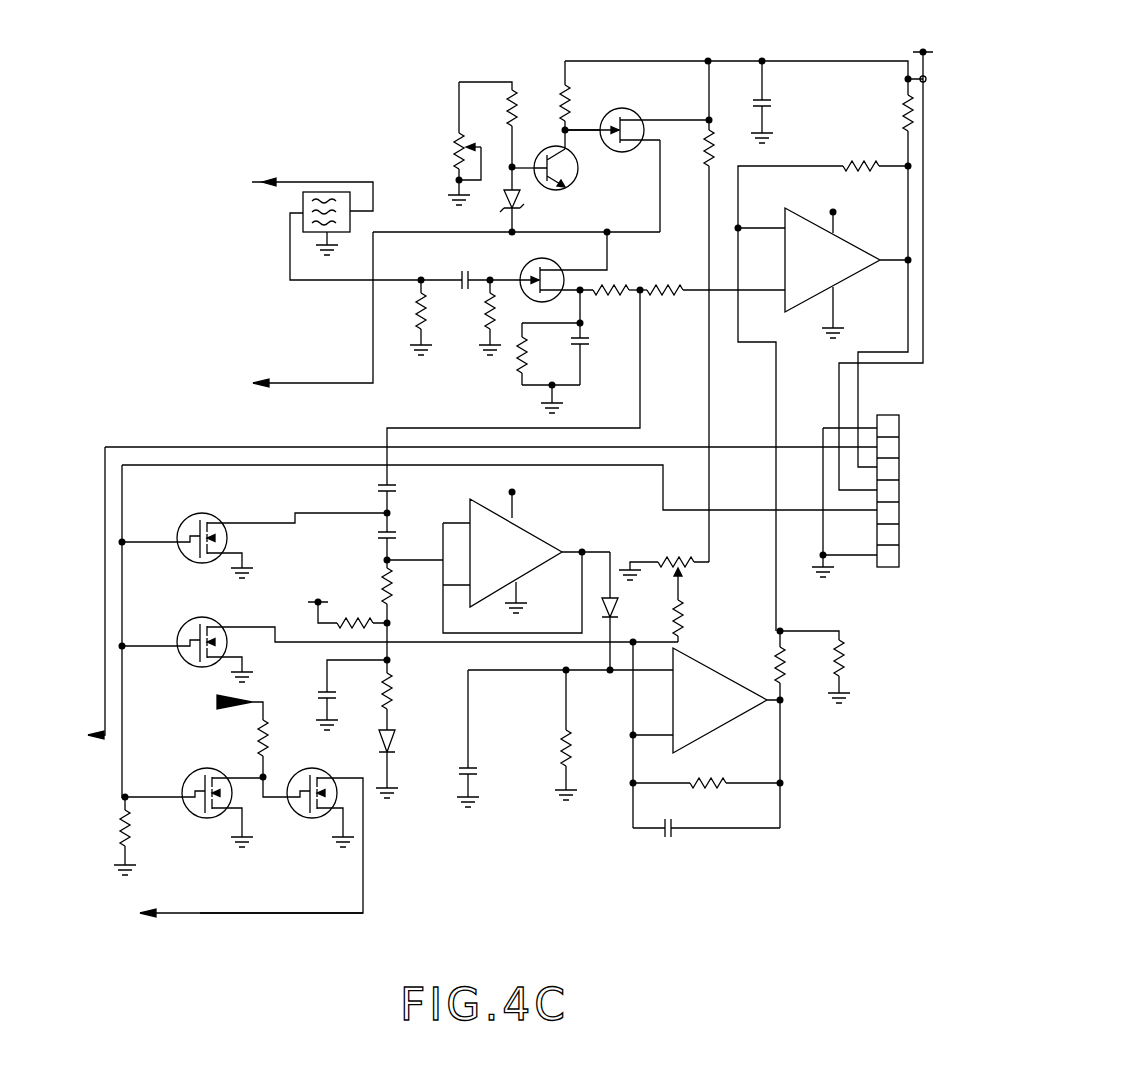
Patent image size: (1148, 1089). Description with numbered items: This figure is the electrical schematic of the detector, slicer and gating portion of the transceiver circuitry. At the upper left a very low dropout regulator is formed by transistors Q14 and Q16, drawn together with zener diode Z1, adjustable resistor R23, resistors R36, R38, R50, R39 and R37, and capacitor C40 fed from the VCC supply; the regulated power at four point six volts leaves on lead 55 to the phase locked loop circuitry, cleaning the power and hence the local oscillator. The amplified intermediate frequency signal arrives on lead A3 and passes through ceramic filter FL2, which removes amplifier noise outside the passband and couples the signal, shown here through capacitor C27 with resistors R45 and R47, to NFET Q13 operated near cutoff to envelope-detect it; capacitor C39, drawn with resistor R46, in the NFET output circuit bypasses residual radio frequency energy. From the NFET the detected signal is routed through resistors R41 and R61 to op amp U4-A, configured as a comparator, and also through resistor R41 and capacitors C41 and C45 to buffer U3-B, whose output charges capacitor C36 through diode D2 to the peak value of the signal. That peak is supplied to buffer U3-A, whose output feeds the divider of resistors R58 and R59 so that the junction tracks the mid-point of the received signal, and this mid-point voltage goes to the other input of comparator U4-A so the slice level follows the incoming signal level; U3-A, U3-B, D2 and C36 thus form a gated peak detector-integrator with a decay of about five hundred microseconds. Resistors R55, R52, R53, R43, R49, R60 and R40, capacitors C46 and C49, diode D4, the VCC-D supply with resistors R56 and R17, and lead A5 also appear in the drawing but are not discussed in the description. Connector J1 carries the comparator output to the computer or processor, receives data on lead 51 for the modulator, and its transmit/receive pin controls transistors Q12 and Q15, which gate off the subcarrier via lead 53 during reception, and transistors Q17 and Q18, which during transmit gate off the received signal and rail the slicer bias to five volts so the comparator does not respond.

The resistor R36 is at (510, 98).
The resistor R38 is at (565, 100).
The resistor R50 is at (708, 145).
The capacitor C40 is at (765, 103).
The supply voltage VCC is at (893, 257).
The resistor R39 is at (905, 113).
The resistor R37 is at (870, 165).
The transistor Q16 is at (635, 93).
The transistor Q14 is at (572, 182).
The potentiometer R23 is at (455, 153).
The zener diode Z1 is at (522, 205).
The lead A3 is at (268, 180).
The ceramic filter FL2 is at (330, 192).
The op amp U4-A is at (851, 272).
The resistor R45 is at (415, 305).
The capacitor C27 is at (462, 276).
The resistor R47 is at (486, 315).
The NFET Q13 is at (532, 262).
The resistor R41 is at (615, 285).
The resistor R61 is at (665, 293).
The capacitor C39 is at (592, 340).
The resistor R46 is at (515, 352).
The lead 55 is at (335, 383).
The lead 51 is at (215, 447).
The output node A5 is at (103, 745).
The transistor Q17 is at (180, 528).
The transistor Q18 is at (180, 632).
The capacitor C45 is at (378, 487).
The capacitor C41 is at (378, 535).
The resistor R52 is at (367, 618).
The resistor R55 is at (392, 590).
The resistor R53 is at (395, 690).
The diode D4 is at (398, 745).
The capacitor C46 is at (325, 685).
The digital supply voltage VCC-D is at (200, 705).
The resistor R56 is at (258, 740).
The transistor Q15 is at (185, 785).
The resistor R17 is at (133, 830).
The transistor Q12 is at (308, 818).
The lead 53 is at (245, 913).
The buffer U3-B is at (530, 566).
The diode D2 is at (625, 606).
The potentiometer R43 is at (683, 555).
The resistor R49 is at (685, 612).
The buffer U3-A is at (735, 712).
The capacitor C36 is at (478, 768).
The resistor R60 is at (563, 760).
The resistor R40 is at (700, 790).
The capacitor C49 is at (675, 835).
The resistor R58 is at (770, 665).
The resistor R59 is at (845, 672).
The connector J1 is at (879, 496).